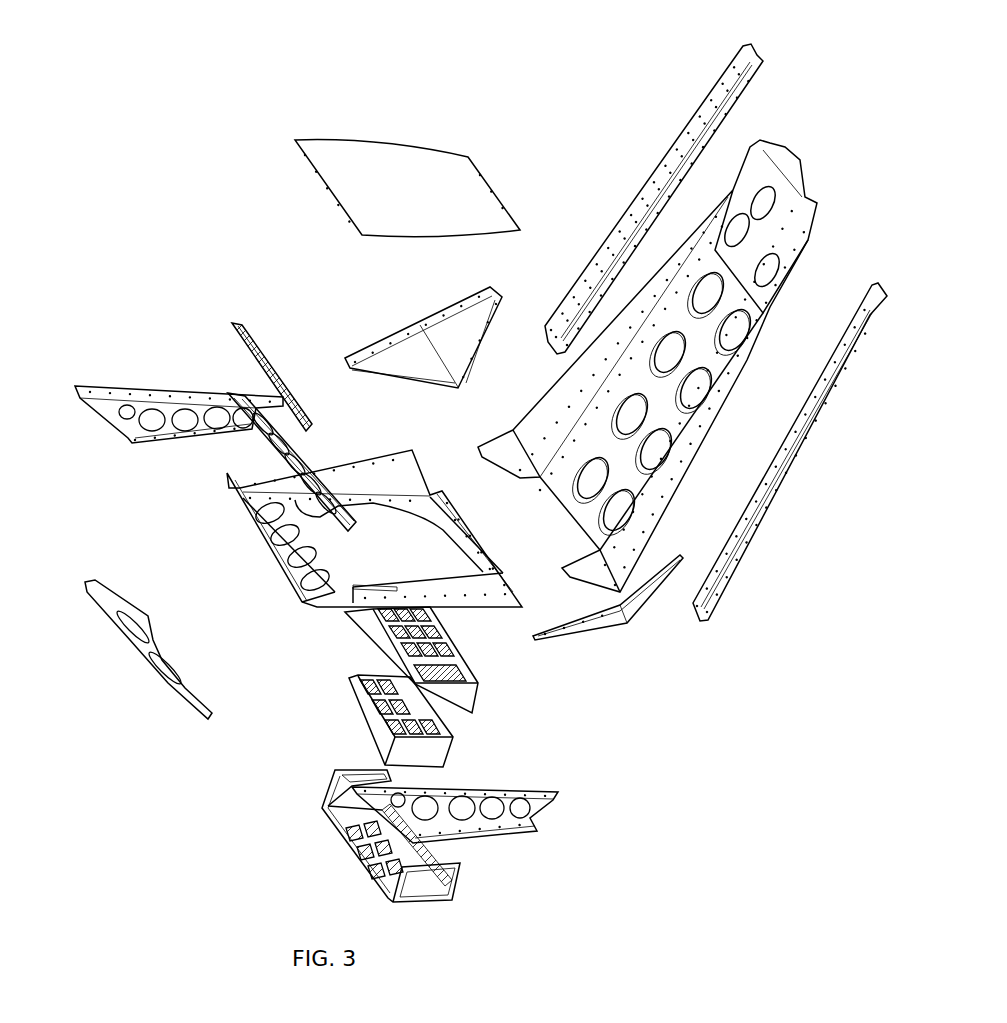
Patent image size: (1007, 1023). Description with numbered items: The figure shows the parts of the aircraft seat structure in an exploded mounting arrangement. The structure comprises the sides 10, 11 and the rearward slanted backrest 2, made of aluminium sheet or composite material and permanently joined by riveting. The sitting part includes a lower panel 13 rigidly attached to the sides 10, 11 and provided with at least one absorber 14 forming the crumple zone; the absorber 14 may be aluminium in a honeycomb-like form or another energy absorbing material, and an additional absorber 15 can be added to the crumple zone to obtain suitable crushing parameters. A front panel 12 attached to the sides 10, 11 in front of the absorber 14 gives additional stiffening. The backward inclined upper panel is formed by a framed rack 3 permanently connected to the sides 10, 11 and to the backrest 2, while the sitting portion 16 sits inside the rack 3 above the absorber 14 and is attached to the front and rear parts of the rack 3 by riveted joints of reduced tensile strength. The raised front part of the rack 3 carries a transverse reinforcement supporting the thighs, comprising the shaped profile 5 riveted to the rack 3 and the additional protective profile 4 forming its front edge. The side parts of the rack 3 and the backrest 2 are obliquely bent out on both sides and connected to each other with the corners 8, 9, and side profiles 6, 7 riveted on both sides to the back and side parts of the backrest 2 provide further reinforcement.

The backrest 2 is at (678, 353).
The rack 3 is at (329, 528).
The protective profile 4 is at (253, 298).
The shaped profile 5 is at (239, 371).
The side profile 6 is at (790, 452).
The side profile 7 is at (702, 185).
The corner 8 is at (401, 316).
The corner 9 is at (630, 631).
The side 10 is at (489, 825).
The side 11 is at (179, 383).
The front panel 12 is at (144, 649).
The lower panel 13 is at (414, 836).
The absorber 14 is at (490, 672).
The additional absorber 15 is at (304, 747).
The sitting portion 16 is at (386, 147).